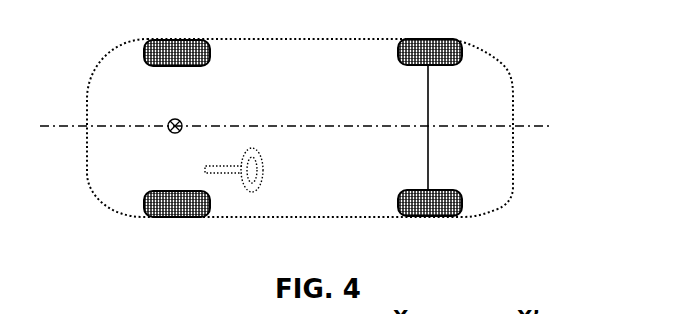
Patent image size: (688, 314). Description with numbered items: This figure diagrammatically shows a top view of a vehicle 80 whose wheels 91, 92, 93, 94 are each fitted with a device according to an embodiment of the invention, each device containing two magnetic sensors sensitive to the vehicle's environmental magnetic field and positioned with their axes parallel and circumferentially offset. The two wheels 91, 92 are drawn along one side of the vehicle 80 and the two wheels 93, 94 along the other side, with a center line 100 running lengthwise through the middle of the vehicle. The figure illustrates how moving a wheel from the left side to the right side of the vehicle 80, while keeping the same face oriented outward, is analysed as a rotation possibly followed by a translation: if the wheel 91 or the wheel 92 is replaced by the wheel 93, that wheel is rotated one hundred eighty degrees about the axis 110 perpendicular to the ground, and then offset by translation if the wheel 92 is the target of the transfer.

The vehicle 80 is at (117, 78).
The wheel 91 is at (155, 50).
The wheel 92 is at (408, 50).
The wheel 93 is at (148, 217).
The wheel 94 is at (407, 213).
The longitudinal center line 100 is at (324, 126).
The axis 110 is at (174, 133).